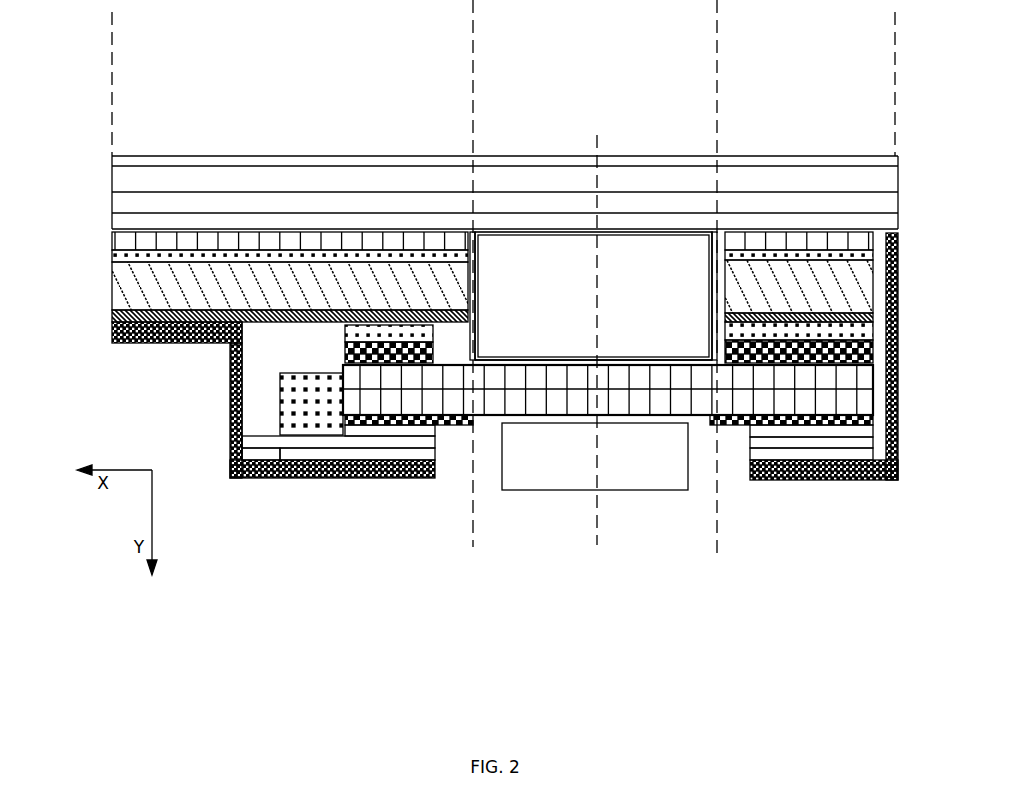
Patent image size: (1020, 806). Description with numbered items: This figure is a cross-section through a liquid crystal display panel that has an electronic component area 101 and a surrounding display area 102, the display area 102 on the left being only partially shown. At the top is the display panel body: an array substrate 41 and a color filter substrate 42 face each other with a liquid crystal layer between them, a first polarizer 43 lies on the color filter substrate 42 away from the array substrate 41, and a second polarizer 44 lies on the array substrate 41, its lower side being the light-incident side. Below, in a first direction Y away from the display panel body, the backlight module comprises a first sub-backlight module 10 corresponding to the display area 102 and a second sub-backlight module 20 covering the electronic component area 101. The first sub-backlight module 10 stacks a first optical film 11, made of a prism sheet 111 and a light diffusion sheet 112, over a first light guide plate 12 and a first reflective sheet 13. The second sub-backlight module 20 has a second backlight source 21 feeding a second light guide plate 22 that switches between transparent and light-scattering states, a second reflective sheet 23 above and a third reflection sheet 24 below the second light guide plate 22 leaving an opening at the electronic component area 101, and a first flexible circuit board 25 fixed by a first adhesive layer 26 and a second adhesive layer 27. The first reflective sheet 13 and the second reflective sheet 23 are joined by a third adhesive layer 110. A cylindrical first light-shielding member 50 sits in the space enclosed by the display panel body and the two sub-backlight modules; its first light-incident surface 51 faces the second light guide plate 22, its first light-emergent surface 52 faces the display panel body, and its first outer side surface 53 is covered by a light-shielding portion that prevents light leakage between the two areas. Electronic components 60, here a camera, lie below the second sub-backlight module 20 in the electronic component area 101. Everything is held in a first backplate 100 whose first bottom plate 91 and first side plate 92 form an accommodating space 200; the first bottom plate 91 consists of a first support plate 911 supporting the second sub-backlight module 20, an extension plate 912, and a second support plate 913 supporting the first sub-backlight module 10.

The first backplate 100 is at (499, 458).
The electronic component area 101 is at (473, 105).
The display area 102 is at (895, 53).
The first sub-backlight module 10 is at (458, 422).
The first optical film 11 is at (458, 420).
The prism sheet 111 is at (118, 238).
The light diffusion sheet 112 is at (118, 258).
The first light guide plate 12 is at (118, 288).
The first reflective sheet 13 is at (118, 314).
The second sub-backlight module 20 is at (561, 524).
The accommodating cavity 200 is at (235, 380).
The second backlight source 21 is at (300, 408).
The second light guide plate 22 is at (860, 393).
The second reflective sheet 23 is at (870, 352).
The third reflection sheet 24 is at (448, 422).
The first flexible circuit board 25 is at (373, 441).
The first adhesive layer 26 is at (413, 427).
The second adhesive layer 27 is at (323, 453).
The array substrate 41 is at (898, 199).
The color filter substrate 42 is at (898, 179).
The first polarizer 43 is at (898, 159).
The second polarizer 44 is at (898, 219).
The first light-shielding member 50 is at (648, 247).
The first light-incident surface 51 is at (551, 360).
The first light-emergent surface 52 is at (539, 232).
The first outer side surface 53 is at (468, 234).
The electronic components 60 is at (655, 473).
The first bottom plate 91 is at (471, 502).
The first support plate 911 is at (255, 470).
The extension plate 912 is at (235, 438).
The second support plate 913 is at (118, 333).
The first side plate 92 is at (892, 420).
The third adhesive layer 110 is at (873, 335).